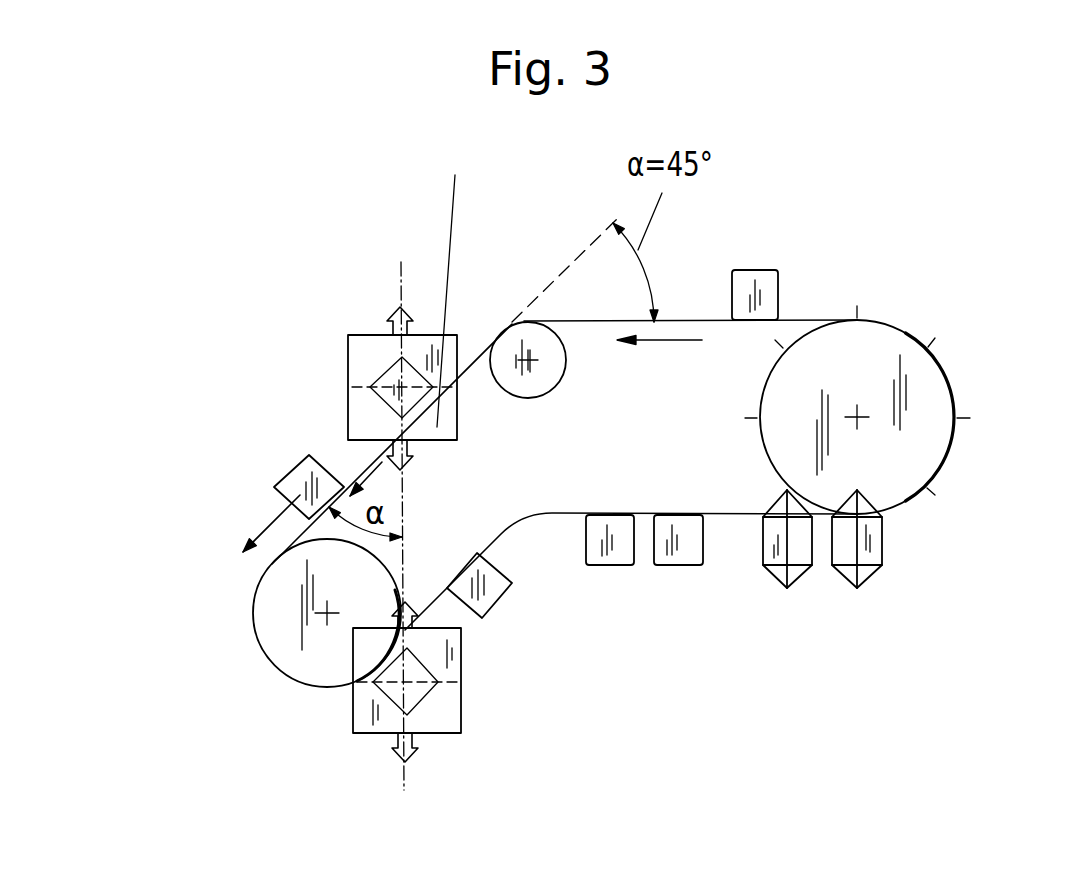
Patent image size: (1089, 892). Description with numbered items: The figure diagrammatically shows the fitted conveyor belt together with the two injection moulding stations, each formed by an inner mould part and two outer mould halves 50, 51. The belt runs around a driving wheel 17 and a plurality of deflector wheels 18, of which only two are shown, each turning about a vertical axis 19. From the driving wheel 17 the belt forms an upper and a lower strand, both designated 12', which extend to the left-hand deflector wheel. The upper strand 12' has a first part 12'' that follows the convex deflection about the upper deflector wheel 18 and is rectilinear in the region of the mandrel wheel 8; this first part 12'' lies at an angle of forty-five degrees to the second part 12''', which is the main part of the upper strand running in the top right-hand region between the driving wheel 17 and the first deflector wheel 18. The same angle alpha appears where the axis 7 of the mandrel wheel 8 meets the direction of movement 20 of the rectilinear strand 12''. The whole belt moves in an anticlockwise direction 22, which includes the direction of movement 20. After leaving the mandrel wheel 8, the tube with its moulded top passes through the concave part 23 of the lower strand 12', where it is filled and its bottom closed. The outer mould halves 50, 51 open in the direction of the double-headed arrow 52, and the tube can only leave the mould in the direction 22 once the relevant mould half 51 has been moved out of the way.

The axis 7 is at (401, 262).
The mandrel wheel 8 is at (329, 486).
The strand 12' is at (674, 437).
The first part of the strand 12'' is at (341, 484).
The second part of the strand 12''' is at (842, 378).
The driving wheel 17 is at (913, 385).
The deflector wheels 18 is at (507, 350).
The vertical axes 19 is at (335, 612).
The direction of movement 20 is at (378, 462).
The anticlockwise direction 22 is at (672, 340).
The concave part 23 is at (512, 528).
The outer mould half 50 is at (365, 347).
The outer mould half 51 is at (452, 283).
The double-headed arrow 52 is at (393, 314).